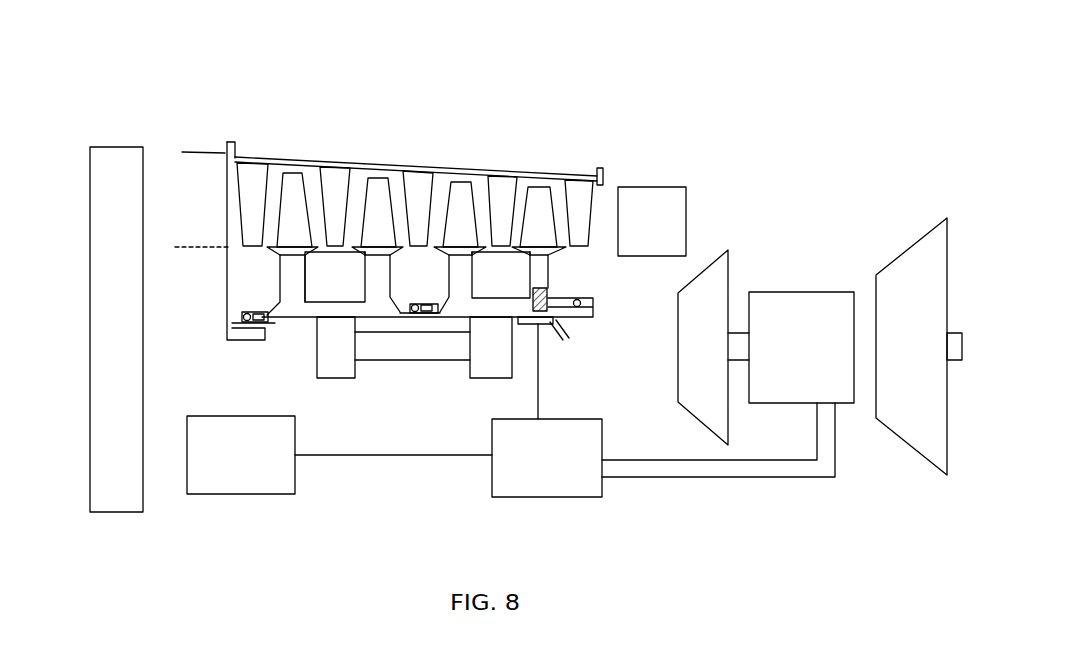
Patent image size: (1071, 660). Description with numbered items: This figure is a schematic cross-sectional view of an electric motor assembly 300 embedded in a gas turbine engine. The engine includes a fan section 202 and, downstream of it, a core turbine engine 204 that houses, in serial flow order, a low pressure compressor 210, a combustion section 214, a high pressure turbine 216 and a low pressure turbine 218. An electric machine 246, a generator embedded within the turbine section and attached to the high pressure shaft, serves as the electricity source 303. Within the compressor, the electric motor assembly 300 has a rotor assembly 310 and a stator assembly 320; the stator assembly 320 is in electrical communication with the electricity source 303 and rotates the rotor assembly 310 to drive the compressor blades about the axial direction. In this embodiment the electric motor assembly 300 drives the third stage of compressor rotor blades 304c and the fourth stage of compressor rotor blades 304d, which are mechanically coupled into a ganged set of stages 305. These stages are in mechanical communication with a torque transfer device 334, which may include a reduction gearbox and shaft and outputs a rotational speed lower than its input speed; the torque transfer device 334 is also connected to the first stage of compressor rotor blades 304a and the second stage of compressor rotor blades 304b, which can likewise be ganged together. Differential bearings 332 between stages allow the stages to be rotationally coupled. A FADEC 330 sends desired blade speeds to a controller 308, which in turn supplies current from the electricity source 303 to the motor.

The fan section 202 is at (118, 146).
The core turbine engine 204 is at (216, 101).
The low pressure compressor 210 is at (602, 148).
The combustion section 214 is at (652, 187).
The high pressure turbine 216 is at (700, 418).
The low pressure turbine 218 is at (915, 247).
The electric machine 246 is at (778, 292).
The electric motor assembly 300 is at (506, 268).
The electricity source 303 is at (850, 405).
The first stage of compressor rotor blades 304a is at (290, 172).
The second stage of compressor rotor blades 304b is at (375, 177).
The third stage of compressor rotor blades 304c is at (460, 181).
The fourth stage of compressor rotor blades 304d is at (545, 186).
The ganged set of stages 305 is at (283, 263).
The controller 308 is at (548, 497).
The rotor assembly 310 is at (564, 279).
The stator assembly 320 is at (560, 337).
The FADEC 330 is at (245, 494).
The differential bearings 332 is at (418, 316).
The torque transfer device 334 is at (378, 378).